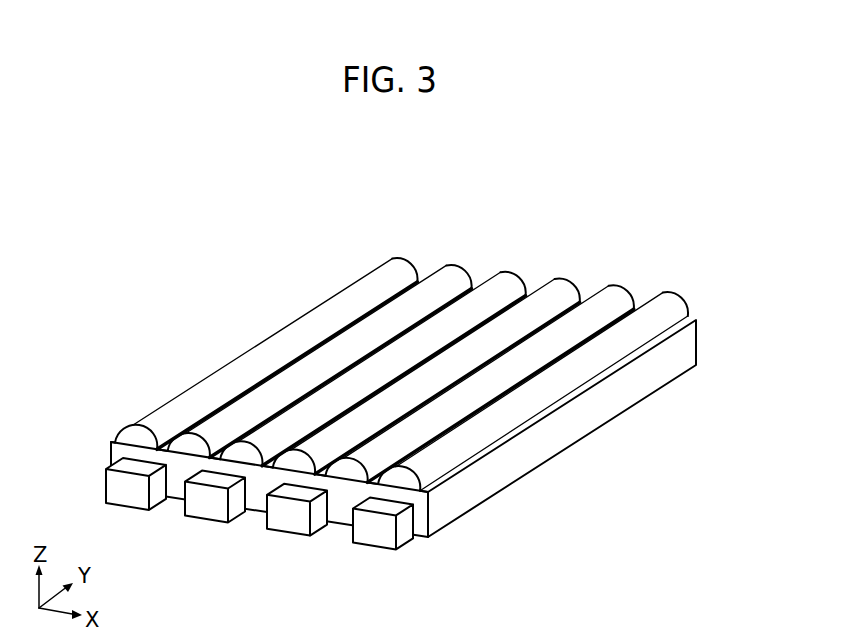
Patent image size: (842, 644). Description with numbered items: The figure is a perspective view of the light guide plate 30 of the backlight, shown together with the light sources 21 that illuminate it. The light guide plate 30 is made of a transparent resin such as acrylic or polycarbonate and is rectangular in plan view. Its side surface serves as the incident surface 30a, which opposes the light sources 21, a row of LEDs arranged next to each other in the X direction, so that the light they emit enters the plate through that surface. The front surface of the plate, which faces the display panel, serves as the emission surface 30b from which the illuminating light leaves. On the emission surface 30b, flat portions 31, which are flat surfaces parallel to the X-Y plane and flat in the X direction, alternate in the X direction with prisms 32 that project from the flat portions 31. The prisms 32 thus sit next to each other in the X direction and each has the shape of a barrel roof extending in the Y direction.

The light guide plate 30 is at (393, 378).
The incident surface 30a is at (111, 457).
The emission surface 30b is at (384, 355).
The flat portions 31 is at (165, 450).
The prisms 32 is at (230, 380).
The light sources 21 is at (208, 511).